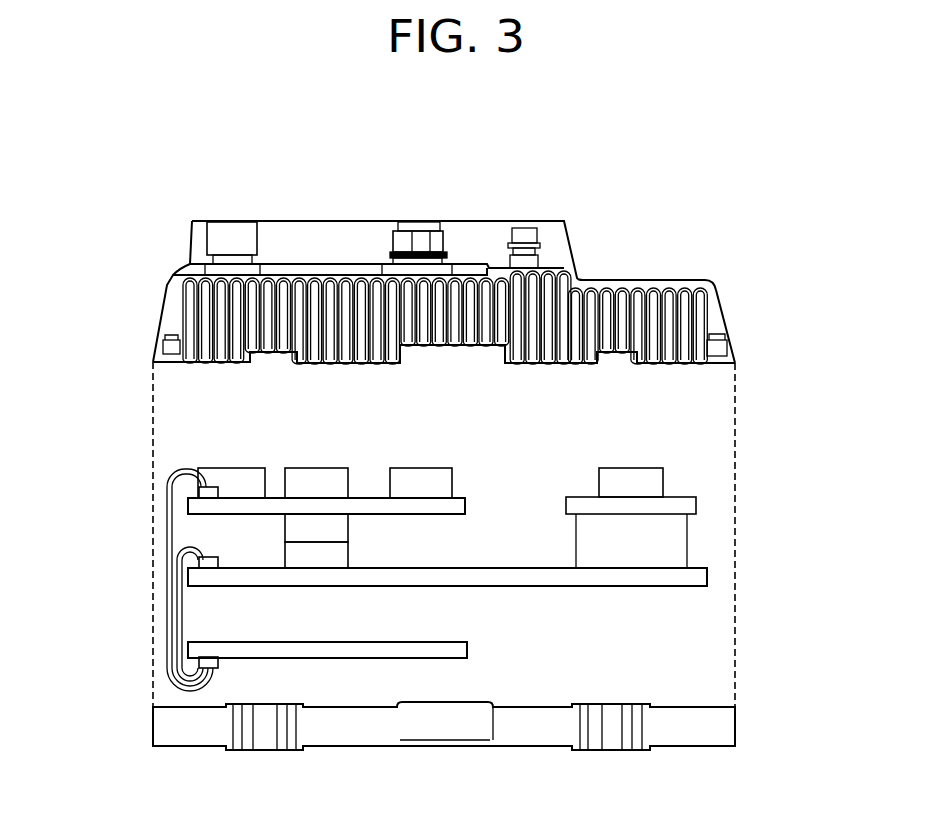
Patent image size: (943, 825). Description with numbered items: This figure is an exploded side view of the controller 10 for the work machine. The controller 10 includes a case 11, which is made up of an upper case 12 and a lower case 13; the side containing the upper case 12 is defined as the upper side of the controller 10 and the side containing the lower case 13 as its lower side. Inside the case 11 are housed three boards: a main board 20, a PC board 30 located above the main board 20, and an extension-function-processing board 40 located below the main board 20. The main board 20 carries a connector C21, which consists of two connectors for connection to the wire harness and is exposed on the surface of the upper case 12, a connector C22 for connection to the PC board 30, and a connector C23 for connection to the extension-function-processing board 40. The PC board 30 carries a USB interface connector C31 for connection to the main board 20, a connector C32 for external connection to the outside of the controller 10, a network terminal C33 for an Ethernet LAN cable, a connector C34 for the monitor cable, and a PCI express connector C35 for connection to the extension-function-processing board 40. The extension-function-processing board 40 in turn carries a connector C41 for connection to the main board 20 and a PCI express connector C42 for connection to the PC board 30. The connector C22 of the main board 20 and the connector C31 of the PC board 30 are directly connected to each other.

The controller 10 is at (681, 192).
The case 11 is at (152, 722).
The upper case 12 is at (741, 330).
The lower case 13 is at (733, 723).
The main board 20 is at (708, 577).
The PC board 30 is at (467, 510).
The extension-function-processing board 40 is at (470, 648).
The connector C21 is at (655, 484).
The connector C22 is at (349, 556).
The connector C23 is at (222, 563).
The USB interface connector C31 is at (349, 528).
The connector C32 is at (412, 467).
The network terminal C33 is at (300, 467).
The connector C34 is at (228, 467).
The PCI express connector C35 is at (194, 491).
The connector C41 is at (252, 590).
The PCI express connector C42 is at (222, 662).